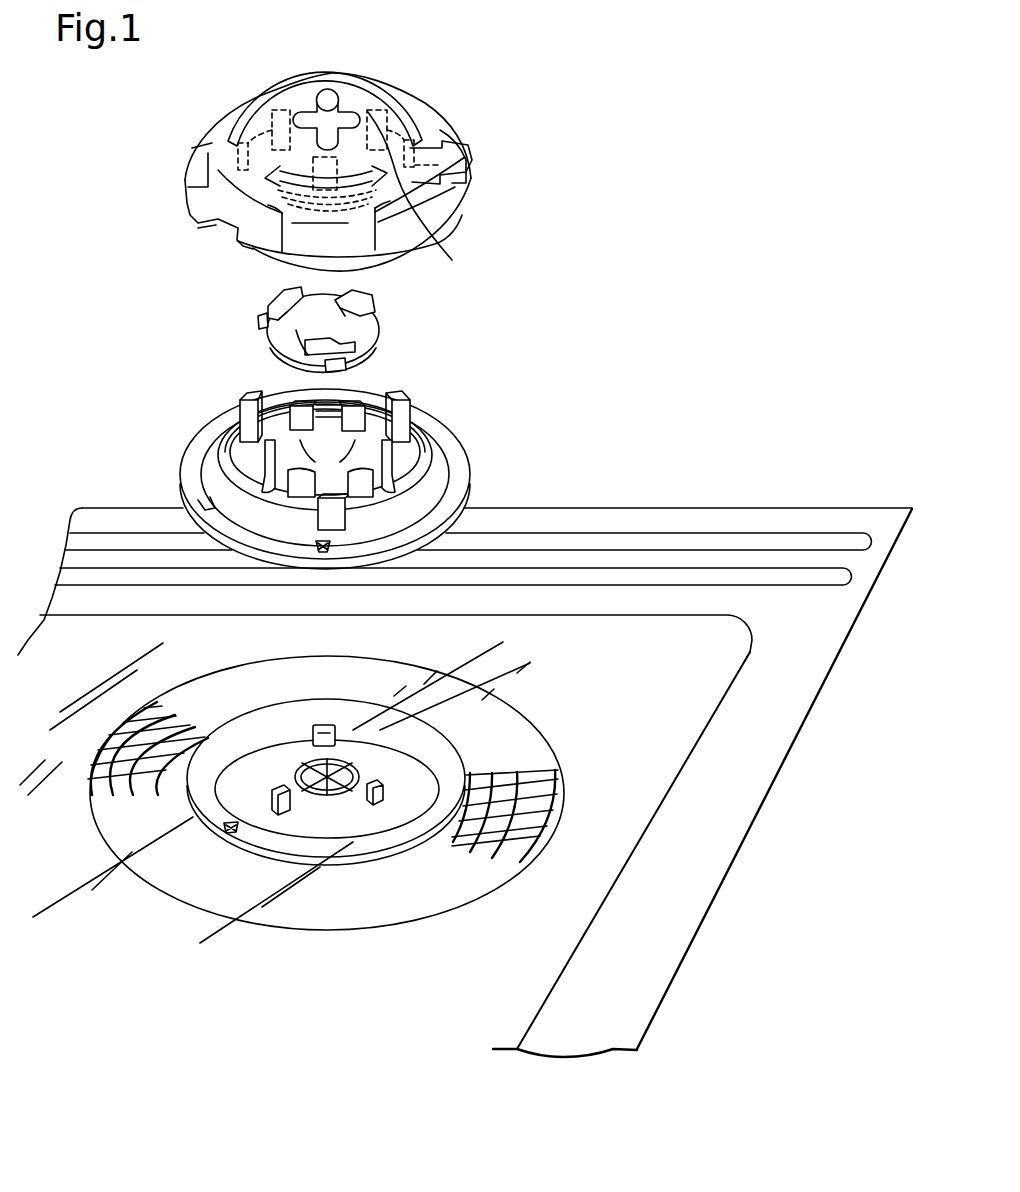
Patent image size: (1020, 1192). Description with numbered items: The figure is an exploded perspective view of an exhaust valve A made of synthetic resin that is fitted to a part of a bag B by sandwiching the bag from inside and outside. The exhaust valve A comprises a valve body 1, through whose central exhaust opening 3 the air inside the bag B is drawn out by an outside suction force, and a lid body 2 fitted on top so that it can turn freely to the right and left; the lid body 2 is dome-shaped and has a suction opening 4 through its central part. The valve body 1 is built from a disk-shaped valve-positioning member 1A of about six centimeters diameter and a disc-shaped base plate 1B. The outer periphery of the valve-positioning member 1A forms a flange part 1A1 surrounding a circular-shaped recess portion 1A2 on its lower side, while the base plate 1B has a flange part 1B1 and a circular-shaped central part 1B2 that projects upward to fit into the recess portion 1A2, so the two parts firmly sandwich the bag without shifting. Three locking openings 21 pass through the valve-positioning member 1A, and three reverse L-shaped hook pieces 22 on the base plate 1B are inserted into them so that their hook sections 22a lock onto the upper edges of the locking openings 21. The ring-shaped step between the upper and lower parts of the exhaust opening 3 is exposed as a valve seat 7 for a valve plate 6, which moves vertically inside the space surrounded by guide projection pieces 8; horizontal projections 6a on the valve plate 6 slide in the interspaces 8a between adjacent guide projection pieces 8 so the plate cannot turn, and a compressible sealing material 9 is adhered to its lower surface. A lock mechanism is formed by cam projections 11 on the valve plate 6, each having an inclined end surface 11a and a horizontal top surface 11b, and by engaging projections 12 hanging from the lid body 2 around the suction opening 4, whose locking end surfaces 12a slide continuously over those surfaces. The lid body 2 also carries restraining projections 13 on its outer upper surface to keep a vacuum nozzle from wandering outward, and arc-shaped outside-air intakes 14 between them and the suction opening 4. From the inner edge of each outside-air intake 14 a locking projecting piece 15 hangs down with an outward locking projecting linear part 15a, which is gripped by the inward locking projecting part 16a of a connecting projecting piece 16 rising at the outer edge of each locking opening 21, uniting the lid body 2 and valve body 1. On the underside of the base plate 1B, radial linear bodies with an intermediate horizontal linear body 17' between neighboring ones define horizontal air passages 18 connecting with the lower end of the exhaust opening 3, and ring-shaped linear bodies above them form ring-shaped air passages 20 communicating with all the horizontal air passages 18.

The valve body 1 is at (600, 462).
The valve-positioning member 1A is at (482, 458).
The flange part 1A1 is at (187, 460).
The circular-shaped recess portion 1A2 is at (420, 455).
The base plate 1B is at (527, 706).
The flange part 1B1 is at (365, 847).
The circular-shaped central part 1B2 is at (340, 717).
The lid body 2 is at (448, 218).
The exhaust opening 3 is at (233, 437).
The suction opening 4 is at (313, 112).
The valve plate 6 is at (367, 330).
The horizontal projections 6a is at (260, 326).
The valve seat 7 is at (365, 767).
The guide projection pieces 8 is at (302, 423).
The interspaces 8a is at (322, 402).
The sealing material 9 is at (290, 368).
The cam projections 11 is at (373, 303).
The inclined end surface 11a is at (270, 304).
The horizontal top surface 11b is at (320, 340).
The engaging projections 12 is at (370, 112).
The locking end surface 12a is at (434, 248).
The restraining projections 13 is at (330, 72).
The outside-air intakes 14 is at (403, 120).
The locking projecting piece 15 is at (458, 156).
The locking projecting linear part 15a is at (468, 172).
The connecting projecting piece 16 is at (410, 403).
The locking projecting part 16a is at (392, 406).
The horizontal linear body 17' is at (350, 782).
The horizontal air passages 18 is at (532, 826).
The ring-shaped air passages 20 is at (530, 864).
The locking openings 21 is at (243, 452).
The hook pieces 22 is at (336, 742).
The hook sections 22a is at (277, 785).
The exhaust valve A is at (524, 99).
The bag B is at (650, 780).